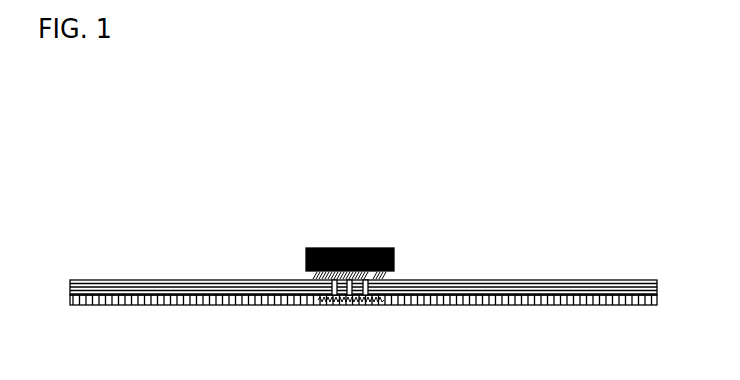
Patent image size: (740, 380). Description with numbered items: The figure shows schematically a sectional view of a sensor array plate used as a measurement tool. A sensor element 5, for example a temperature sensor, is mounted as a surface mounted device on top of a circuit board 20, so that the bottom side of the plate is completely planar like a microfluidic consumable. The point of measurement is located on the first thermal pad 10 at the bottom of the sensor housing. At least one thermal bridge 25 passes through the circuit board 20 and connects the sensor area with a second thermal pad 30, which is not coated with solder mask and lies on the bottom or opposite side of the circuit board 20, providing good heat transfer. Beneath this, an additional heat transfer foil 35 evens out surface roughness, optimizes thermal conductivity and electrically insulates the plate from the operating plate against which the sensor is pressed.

The sensor element 5 is at (403, 209).
The first thermal pad 10 is at (387, 248).
The circuit board 20 is at (182, 291).
The thermal bridge 25 is at (371, 289).
The second thermal pad 30 is at (332, 302).
The heat transfer foil 35 is at (188, 305).